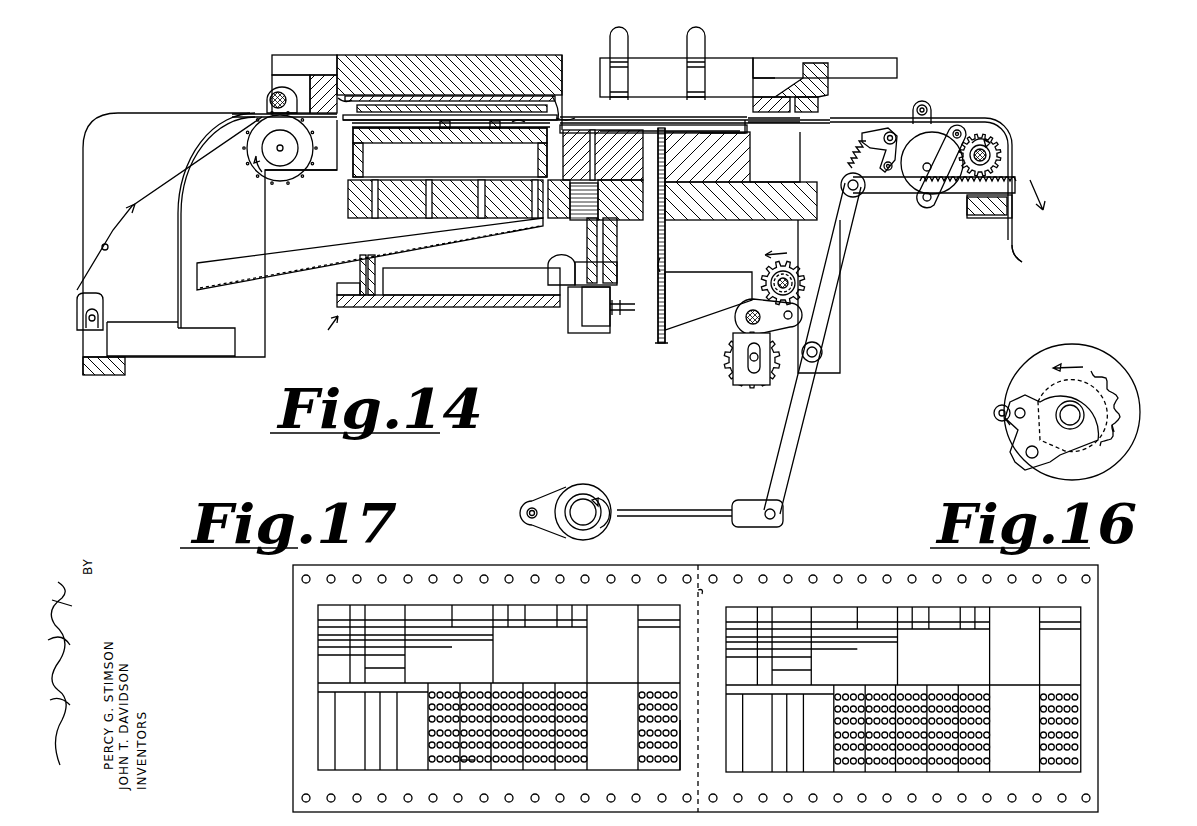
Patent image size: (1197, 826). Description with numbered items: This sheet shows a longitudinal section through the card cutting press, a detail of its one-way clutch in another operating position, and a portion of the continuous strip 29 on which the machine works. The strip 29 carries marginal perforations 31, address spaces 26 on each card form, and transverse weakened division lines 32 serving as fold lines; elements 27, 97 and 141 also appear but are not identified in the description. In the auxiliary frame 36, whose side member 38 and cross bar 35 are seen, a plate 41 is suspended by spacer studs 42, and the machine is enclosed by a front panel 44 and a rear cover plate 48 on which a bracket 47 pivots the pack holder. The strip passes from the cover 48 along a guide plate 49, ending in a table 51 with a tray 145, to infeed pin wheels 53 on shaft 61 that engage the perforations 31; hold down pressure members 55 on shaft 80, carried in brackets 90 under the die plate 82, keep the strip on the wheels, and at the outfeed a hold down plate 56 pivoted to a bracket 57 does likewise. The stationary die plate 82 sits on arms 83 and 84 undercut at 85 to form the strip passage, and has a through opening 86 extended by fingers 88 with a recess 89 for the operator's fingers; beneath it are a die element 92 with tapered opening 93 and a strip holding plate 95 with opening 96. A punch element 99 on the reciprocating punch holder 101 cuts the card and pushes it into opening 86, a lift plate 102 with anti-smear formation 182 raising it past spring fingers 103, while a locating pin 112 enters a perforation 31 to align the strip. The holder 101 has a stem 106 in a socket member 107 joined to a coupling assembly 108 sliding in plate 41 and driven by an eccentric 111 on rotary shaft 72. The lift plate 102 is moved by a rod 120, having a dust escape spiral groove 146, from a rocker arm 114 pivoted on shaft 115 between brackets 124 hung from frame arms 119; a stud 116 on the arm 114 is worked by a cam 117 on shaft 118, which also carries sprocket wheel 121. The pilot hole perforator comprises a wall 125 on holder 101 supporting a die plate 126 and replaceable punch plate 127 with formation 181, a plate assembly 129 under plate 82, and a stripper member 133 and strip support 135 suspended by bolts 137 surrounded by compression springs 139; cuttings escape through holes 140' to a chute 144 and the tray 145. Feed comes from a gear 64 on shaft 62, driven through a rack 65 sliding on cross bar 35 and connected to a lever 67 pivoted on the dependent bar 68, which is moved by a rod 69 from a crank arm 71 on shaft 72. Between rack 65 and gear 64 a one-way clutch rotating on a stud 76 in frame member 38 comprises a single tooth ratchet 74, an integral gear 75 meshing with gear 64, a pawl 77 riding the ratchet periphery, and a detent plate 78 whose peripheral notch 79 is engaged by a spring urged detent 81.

In FIG. 17, the address spaces 26 is at (605, 765).
In FIG. 17, the punch hole index marks 27 is at (477, 768).
In FIG. 14, the strip 29 is at (108, 250).
In FIG. 17, the strip 29 is at (318, 608).
In FIG. 17, the marginal perforations 31 is at (432, 575).
In FIG. 17, the division line 32 is at (698, 590).
In FIG. 14, the cross bar 35 is at (970, 220).
In FIG. 14, the auxiliary frame structure 36 is at (323, 331).
In FIG. 14, the side member 38 is at (322, 182).
In FIG. 14, the plate 41 is at (375, 308).
In FIG. 14, the spacer studs 42 is at (603, 232).
In FIG. 14, the front panel 44 is at (1022, 256).
In FIG. 14, the bracket 47 is at (103, 305).
In FIG. 14, the rear cover plate 48 is at (83, 226).
In FIG. 14, the guide plate 49 is at (181, 220).
In FIG. 14, the table 51 is at (165, 360).
In FIG. 14, the infeed pin wheels 53 is at (257, 168).
In FIG. 14, the hold down pressure member 55 is at (270, 98).
In FIG. 14, the hold down plate 56 is at (1010, 126).
In FIG. 14, the bracket 57 is at (930, 106).
In FIG. 14, the transverse shaft 61 is at (280, 148).
In FIG. 14, the shaft 62 is at (988, 152).
In FIG. 14, the gear 64 is at (1002, 158).
In FIG. 16, the gear 64 is at (1130, 410).
In FIG. 14, the rack 65 is at (905, 192).
In FIG. 14, the lever 67 is at (790, 405).
In FIG. 14, the dependent bar 68 is at (830, 332).
In FIG. 14, the rod 69 is at (690, 510).
In FIG. 14, the crank arm 71 is at (552, 496).
In FIG. 14, the rotary shaft 72 is at (587, 512).
In FIG. 16, the single tooth ratchet 74 is at (1040, 400).
In FIG. 16, the gear 75 is at (1115, 383).
In FIG. 14, the stud 76 is at (941, 166).
In FIG. 16, the stud 76 is at (1070, 415).
In FIG. 16, the pawl 77 is at (1048, 458).
In FIG. 14, the detent plate 78 is at (915, 196).
In FIG. 16, the detent plate 78 is at (1098, 352).
In FIG. 16, the peripheral notch 79 is at (1005, 428).
In FIG. 14, the shaft 80 is at (267, 106).
In FIG. 14, the detent 81 is at (874, 130).
In FIG. 16, the detent 81 is at (994, 413).
In FIG. 14, the die plate 82 is at (890, 68).
In FIG. 14, the arm 83 is at (324, 75).
In FIG. 14, the arm 84 is at (822, 100).
In FIG. 14, the undercut 85 is at (327, 116).
In FIG. 14, the through opening 86 is at (562, 62).
In FIG. 14, the fingers 88 is at (695, 40).
In FIG. 14, the recess 89 is at (773, 80).
In FIG. 14, the brackets 90 is at (272, 65).
In FIG. 14, the die element 92 is at (562, 98).
In FIG. 14, the opening 93 is at (578, 112).
In FIG. 14, the strip holding plate 95 is at (772, 126).
In FIG. 14, the opening 96 is at (737, 118).
In FIG. 14, the strip plate 97 is at (628, 120).
In FIG. 14, the punch element 99 is at (752, 165).
In FIG. 14, the punch holder 101 is at (698, 220).
In FIG. 14, the lift plate 102 is at (685, 122).
In FIG. 14, the spring fingers 103 is at (687, 65).
In FIG. 14, the stem portion 106 is at (575, 212).
In FIG. 14, the socket member 107 is at (550, 280).
In FIG. 14, the coupling assembly 108 is at (603, 330).
In FIG. 14, the eccentric formation 111 is at (602, 492).
In FIG. 14, the locating pin 112 is at (608, 118).
In FIG. 14, the rocker arm 114 is at (676, 332).
In FIG. 14, the shaft 115 is at (746, 316).
In FIG. 14, the stud 116 is at (792, 315).
In FIG. 14, the cam 117 is at (762, 272).
In FIG. 14, the shaft 118 is at (790, 284).
In FIG. 14, the frame arms 119 is at (470, 280).
In FIG. 14, the rod 120 is at (665, 244).
In FIG. 14, the sprocket wheel 121 is at (797, 275).
In FIG. 14, the brackets 124 is at (740, 388).
In FIG. 14, the wall 125 is at (403, 218).
In FIG. 14, the die plate 126 is at (390, 138).
In FIG. 14, the punch plate 127 is at (430, 136).
In FIG. 14, the plate assembly 129 is at (343, 98).
In FIG. 14, the stripper member 133 is at (403, 100).
In FIG. 14, the strip support 135 is at (427, 107).
In FIG. 14, the bolts 137 is at (493, 128).
In FIG. 14, the compression springs 139 is at (498, 100).
In FIG. 14, the holes 140' is at (370, 254).
In FIG. 14, the spacer 141 is at (455, 128).
In FIG. 14, the chute 144 is at (290, 275).
In FIG. 14, the tray 145 is at (150, 358).
In FIG. 14, the spiral groove 146 is at (662, 265).
In FIG. 14, the formation 181 is at (520, 128).
In FIG. 14, the formation 182 is at (718, 120).